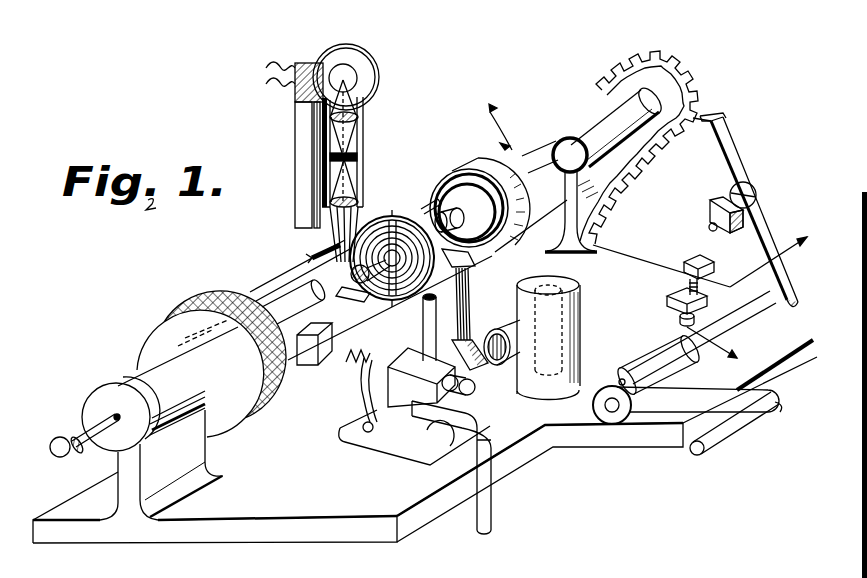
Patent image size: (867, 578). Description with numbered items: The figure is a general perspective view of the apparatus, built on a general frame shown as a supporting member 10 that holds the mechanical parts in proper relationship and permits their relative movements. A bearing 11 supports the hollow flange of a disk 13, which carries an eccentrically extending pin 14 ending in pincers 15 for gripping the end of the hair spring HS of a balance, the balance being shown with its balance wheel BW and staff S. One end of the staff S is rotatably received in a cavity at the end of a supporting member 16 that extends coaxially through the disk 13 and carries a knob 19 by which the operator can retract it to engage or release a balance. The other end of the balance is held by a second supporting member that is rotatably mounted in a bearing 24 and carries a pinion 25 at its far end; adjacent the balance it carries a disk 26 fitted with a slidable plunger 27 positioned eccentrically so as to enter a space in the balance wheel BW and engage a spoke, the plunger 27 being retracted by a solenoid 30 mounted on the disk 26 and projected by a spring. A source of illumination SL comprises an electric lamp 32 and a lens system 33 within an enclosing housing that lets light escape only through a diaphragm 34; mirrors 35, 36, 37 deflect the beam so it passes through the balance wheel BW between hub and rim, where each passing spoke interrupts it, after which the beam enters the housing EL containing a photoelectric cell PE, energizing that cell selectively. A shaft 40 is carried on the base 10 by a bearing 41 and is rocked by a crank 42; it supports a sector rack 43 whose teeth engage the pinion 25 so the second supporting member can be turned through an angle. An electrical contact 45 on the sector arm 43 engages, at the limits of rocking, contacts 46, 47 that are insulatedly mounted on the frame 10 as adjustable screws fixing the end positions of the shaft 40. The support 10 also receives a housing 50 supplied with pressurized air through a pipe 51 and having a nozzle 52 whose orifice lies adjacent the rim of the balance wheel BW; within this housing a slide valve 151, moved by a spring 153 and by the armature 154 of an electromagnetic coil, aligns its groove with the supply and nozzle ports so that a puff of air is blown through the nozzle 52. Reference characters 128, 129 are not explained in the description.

The supporting member 10 is at (425, 371).
The bearing 11 is at (157, 372).
The disk 13 is at (259, 414).
The eccentrically extending pin 14 is at (287, 316).
The pincers 15 is at (309, 253).
The supporting member 16 is at (272, 292).
The knob 19 is at (59, 452).
The bearing 24 is at (648, 102).
The pinion 25 is at (665, 60).
The disk 26 is at (471, 170).
The slidable plunger 27 is at (437, 198).
The solenoid 30 is at (528, 150).
The electric lamp 32 is at (352, 78).
The lens system 33 is at (358, 117).
The diaphragm 34 is at (362, 150).
The mirror 35 is at (340, 312).
The mirror 36 is at (476, 262).
The mirror 37 is at (482, 367).
The shaft 40 is at (730, 337).
The bearing 41 is at (650, 370).
The crank 42 is at (750, 418).
The sector rack 43 is at (723, 125).
The electrical contact 45 is at (692, 258).
The contact 46 is at (710, 220).
The contact 47 is at (682, 287).
The housing 50 is at (408, 350).
The pipe 51 is at (492, 494).
The nozzle 52 is at (424, 322).
The direction arrow 128 is at (490, 112).
The direction arrow 129 is at (505, 150).
The slide valve 151 is at (476, 395).
The spring 153 is at (358, 366).
The armature 154 is at (366, 402).
The balance wheel BW is at (431, 220).
The housing EL is at (582, 300).
The hair spring HS is at (440, 168).
The photoelectric cell PE is at (563, 325).
The staff S is at (457, 226).
The source of illumination SL is at (351, 46).